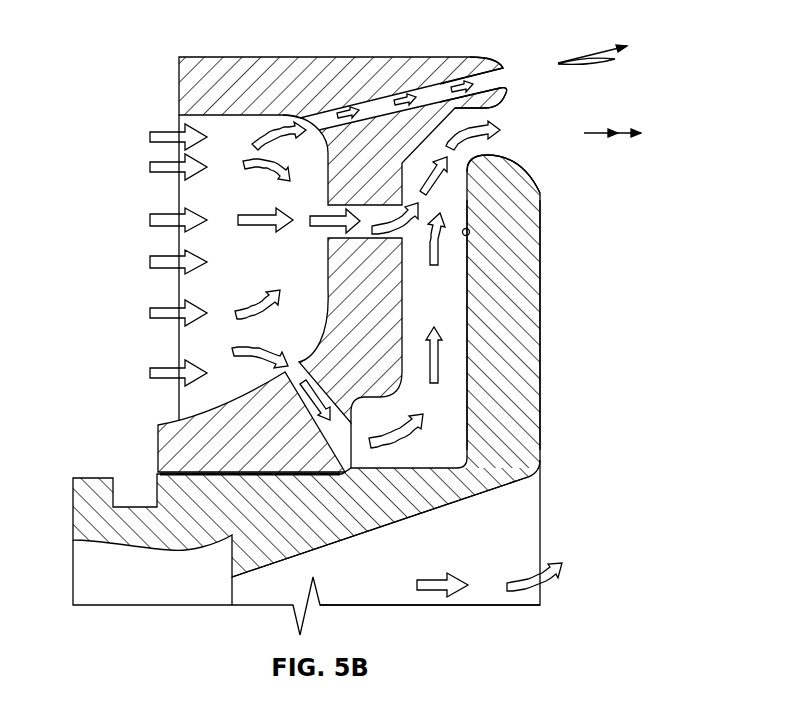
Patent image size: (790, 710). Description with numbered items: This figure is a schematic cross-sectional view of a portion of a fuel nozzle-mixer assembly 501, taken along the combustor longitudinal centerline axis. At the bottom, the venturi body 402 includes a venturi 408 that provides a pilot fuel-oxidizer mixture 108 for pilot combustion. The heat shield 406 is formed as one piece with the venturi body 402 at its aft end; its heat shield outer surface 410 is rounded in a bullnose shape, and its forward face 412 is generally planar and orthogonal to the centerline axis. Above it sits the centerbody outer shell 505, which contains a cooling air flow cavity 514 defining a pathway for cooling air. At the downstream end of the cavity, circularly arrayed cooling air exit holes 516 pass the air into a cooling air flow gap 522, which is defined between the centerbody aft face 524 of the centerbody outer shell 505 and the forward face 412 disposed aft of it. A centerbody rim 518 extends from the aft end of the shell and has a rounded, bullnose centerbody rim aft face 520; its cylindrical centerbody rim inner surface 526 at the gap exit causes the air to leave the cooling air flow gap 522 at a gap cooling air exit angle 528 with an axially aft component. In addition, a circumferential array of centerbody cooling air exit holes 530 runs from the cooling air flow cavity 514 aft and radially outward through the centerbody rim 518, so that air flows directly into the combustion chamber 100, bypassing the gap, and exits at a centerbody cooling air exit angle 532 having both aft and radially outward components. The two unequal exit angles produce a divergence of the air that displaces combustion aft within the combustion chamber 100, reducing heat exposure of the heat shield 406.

The fuel nozzle-mixer assembly 501 is at (132, 30).
The centerbody outer shell 505 is at (260, 57).
The centerbody rim 518 is at (437, 57).
The centerbody cooling air exit holes 530 is at (507, 71).
The centerbody cooling air exit angle 532 is at (610, 60).
The centerbody rim aft face 520 is at (508, 86).
The centerbody rim inner surface 526 is at (485, 109).
The gap cooling air exit angle 528 is at (605, 132).
The heat shield outer surface 410 is at (528, 170).
The forward face 412 is at (470, 234).
The combustion chamber 100 is at (674, 231).
The heat shield 406 is at (540, 288).
The centerbody aft face 524 is at (402, 253).
The cooling air flow gap 522 is at (413, 308).
The cooling air flow cavity 514 is at (240, 200).
The cooling air exit holes 516 is at (316, 236).
The venturi body 402 is at (540, 432).
The venturi 408 is at (427, 512).
The pilot fuel-oxidizer mixture 108 is at (544, 583).